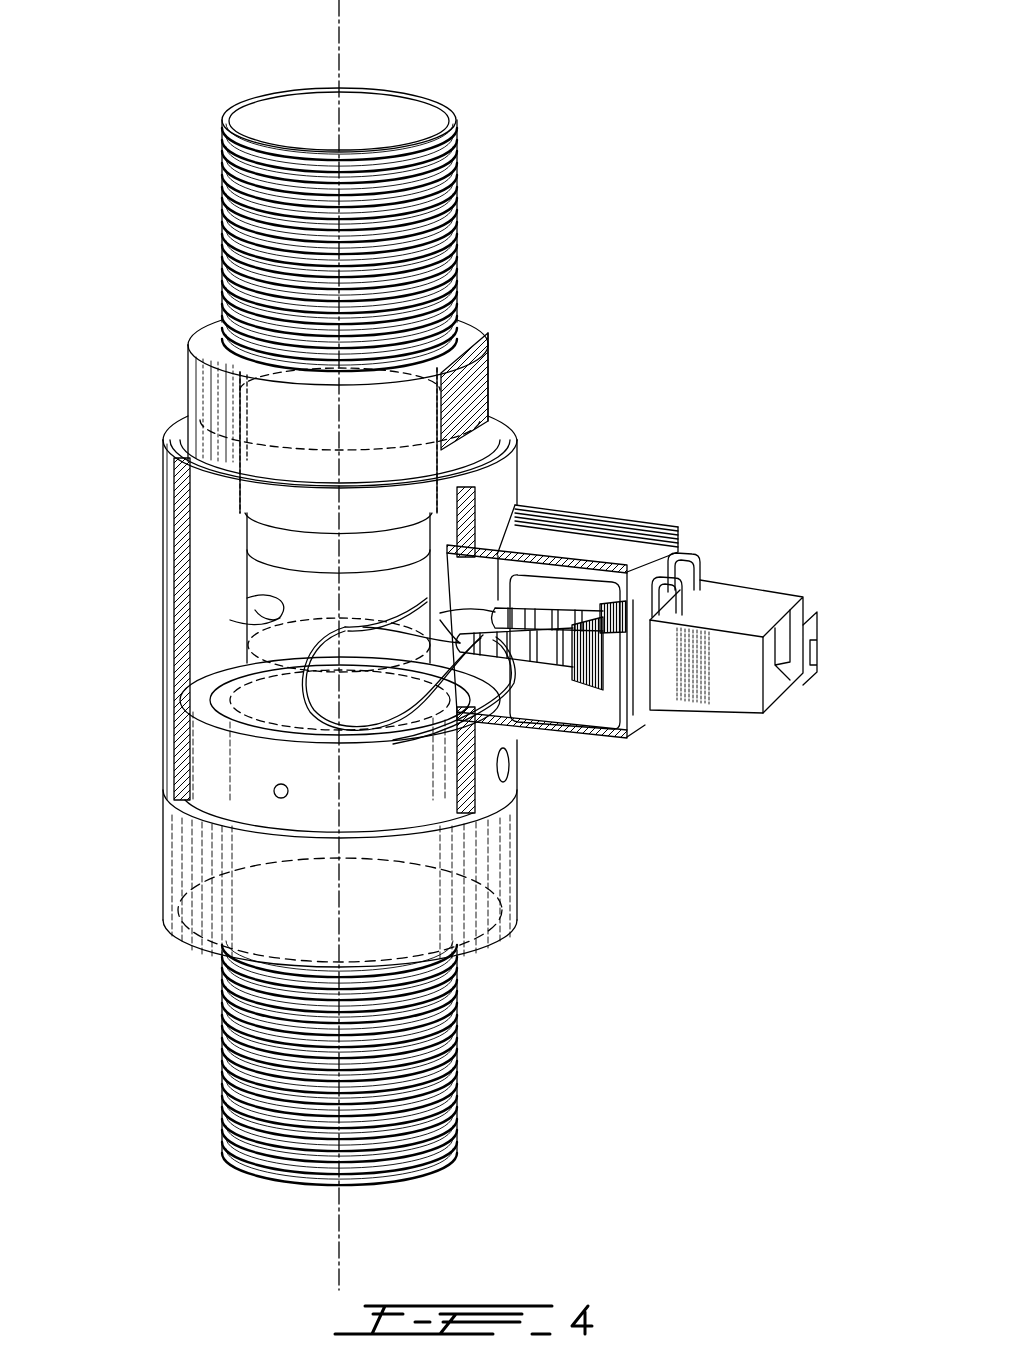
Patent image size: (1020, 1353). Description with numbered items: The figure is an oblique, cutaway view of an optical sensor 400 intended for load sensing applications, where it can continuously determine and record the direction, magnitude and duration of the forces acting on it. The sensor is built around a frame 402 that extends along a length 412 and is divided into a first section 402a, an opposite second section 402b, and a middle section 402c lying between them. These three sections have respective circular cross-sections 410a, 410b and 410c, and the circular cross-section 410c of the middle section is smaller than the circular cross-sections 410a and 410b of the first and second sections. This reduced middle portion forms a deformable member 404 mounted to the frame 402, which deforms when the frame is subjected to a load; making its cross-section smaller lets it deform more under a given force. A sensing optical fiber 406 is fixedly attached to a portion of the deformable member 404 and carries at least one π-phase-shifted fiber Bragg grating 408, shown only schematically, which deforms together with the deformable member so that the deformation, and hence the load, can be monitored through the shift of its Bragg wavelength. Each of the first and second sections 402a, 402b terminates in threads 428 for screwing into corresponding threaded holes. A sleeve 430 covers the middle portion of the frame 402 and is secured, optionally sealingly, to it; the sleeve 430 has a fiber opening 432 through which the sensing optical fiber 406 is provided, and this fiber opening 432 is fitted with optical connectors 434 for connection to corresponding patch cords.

The optical sensor 400 is at (645, 100).
The frame 402 is at (480, 375).
The first section 402a is at (205, 352).
The second section 402b is at (180, 853).
The middle section 402c is at (257, 621).
The deformable member 404 is at (407, 577).
The sensing optical fiber 406 is at (247, 603).
The π-phase-shifted fiber Bragg grating 408 is at (507, 770).
The circular cross-section of the first section 410a is at (445, 344).
The circular cross-section of the second section 410b is at (495, 965).
The circular cross-section of the middle section 410c is at (257, 675).
The length 412 is at (340, 37).
The threads 428 is at (437, 160).
The sleeve 430 is at (507, 438).
The fiber opening 432 is at (642, 548).
The optical connectors 434 is at (650, 628).